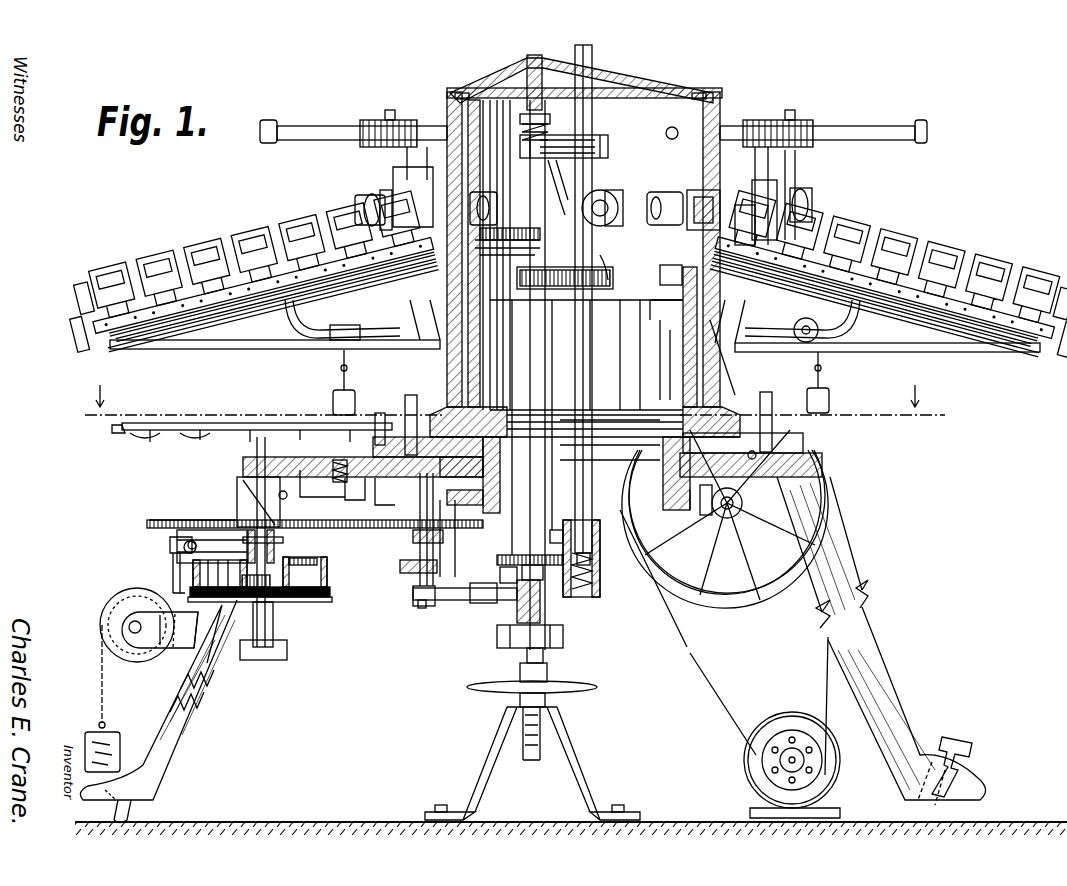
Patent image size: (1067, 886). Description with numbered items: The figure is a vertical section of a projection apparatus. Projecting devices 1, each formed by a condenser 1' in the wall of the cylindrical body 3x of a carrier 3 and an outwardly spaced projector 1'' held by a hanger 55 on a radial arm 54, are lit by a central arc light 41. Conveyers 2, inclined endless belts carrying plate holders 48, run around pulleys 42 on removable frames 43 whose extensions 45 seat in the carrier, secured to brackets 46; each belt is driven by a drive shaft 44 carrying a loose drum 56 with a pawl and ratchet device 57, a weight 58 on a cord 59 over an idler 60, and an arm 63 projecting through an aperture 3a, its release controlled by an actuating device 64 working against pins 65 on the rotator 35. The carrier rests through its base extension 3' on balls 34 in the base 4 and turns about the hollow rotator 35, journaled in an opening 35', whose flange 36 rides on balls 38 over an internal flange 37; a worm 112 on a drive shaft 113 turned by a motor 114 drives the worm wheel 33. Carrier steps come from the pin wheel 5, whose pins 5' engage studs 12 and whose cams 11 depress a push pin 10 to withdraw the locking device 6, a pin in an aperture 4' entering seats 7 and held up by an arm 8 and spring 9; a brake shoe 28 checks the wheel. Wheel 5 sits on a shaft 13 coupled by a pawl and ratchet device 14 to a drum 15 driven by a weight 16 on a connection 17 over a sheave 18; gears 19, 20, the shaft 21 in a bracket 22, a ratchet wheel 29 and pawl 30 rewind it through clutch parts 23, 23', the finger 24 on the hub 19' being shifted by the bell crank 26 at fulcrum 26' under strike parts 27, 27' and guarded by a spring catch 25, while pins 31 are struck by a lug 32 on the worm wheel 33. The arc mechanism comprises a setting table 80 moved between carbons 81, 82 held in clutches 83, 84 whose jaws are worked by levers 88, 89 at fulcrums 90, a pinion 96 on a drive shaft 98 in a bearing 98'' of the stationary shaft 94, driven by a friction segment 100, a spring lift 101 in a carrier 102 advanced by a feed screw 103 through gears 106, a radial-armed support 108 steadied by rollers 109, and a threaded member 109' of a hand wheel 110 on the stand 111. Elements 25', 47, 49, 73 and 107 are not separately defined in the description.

The projecting devices 1 is at (500, 203).
The condensers 1' is at (703, 189).
The projectors 1'' is at (574, 197).
The conveyers 2 is at (92, 335).
The carrier 3 is at (508, 374).
The annular base extension 3' is at (775, 450).
The aperture of carrier body 3a is at (672, 265).
The cylindrical body 3x is at (712, 120).
The frame or base 4 is at (559, 466).
The aperture of base 4' is at (346, 497).
The pin wheel 5 is at (170, 451).
The pins 5' is at (114, 443).
The locking device 6 is at (375, 498).
The seats 7 is at (679, 612).
The arm 8 is at (275, 500).
The spring 9 is at (320, 494).
The push pin 10 is at (285, 423).
The cams 11 is at (333, 470).
The studs 12 is at (379, 413).
The vertical shaft 13 is at (287, 650).
The pawl and ratchet device 14 is at (235, 602).
The operating drum 15 is at (275, 605).
The weight 16 is at (120, 745).
The flexible connection 17 is at (105, 690).
The guide sheave 18 is at (102, 608).
The spur gear 19 is at (286, 517).
The depending hub part 19' is at (193, 504).
The spur gear 20 is at (418, 540).
The driven shaft 21 is at (420, 608).
The depending bracket 22 is at (413, 592).
The clutch part 23 is at (280, 546).
The clutch part 23' is at (274, 563).
The finger 24 is at (242, 582).
The spring catch 25 is at (178, 519).
The cup 25' is at (320, 556).
The shifter 26 is at (157, 545).
The fulcrum 26' is at (147, 573).
The strike part 27 is at (126, 630).
The strike part 27' is at (181, 662).
The brake shoe 28 is at (240, 478).
The ratchet wheel 29 is at (461, 467).
The pawl 30 is at (465, 494).
The pins 31 is at (433, 551).
The strike lug 32 is at (458, 538).
The worm wheel 33 is at (673, 509).
The balls 34 is at (745, 500).
The rotator 35 is at (655, 473).
The opening of base 35' is at (644, 500).
The external annular flange 36 is at (610, 445).
The internal flange 37 is at (610, 425).
The balls 38 is at (610, 464).
The electric arc light 41 is at (607, 203).
The pulleys 42 is at (215, 343).
The frames 43 is at (240, 352).
The drive shaft 44 is at (597, 419).
The spaced extensions 45 is at (655, 222).
The brackets 46 is at (315, 348).
The end clip 47 is at (105, 280).
The plate holders 48 is at (185, 268).
The strap 49 is at (772, 209).
The radial arms 54 is at (300, 128).
The hangers 55 is at (405, 150).
The loose drum 56 is at (430, 349).
The pawl and ratchet device 57 is at (665, 365).
The weight 58 is at (333, 400).
The flexible connection 59 is at (341, 367).
The idler 60 is at (360, 348).
The arm 63 is at (646, 360).
The actuating device 64 is at (666, 309).
The pins 65 is at (645, 318).
The magazine plate 73 is at (140, 349).
The setting table 80 is at (483, 195).
The carbon 81 is at (590, 331).
The carbon 82 is at (560, 165).
The clutch 83 is at (627, 261).
The clutch 84 is at (606, 140).
The shifter lever 88 is at (603, 196).
The shifter lever 89 is at (570, 265).
The fulcrum 90 is at (505, 605).
The stationary shaft 94 is at (470, 92).
The pinion 96 is at (507, 244).
The drive shaft 98 is at (514, 557).
The bearing 98'' is at (515, 648).
The friction segment 100 is at (470, 603).
The spring lift 101 is at (598, 595).
The carrier 102 is at (600, 570).
The feed screw 103 is at (575, 386).
The train of gears 106 is at (548, 600).
The collar 107 is at (516, 126).
The radial-armed support 108 is at (575, 60).
The rollers 109 is at (555, 82).
The internally threaded member 109' is at (580, 665).
The hand wheel 110 is at (597, 688).
The stand 111 is at (585, 760).
The worm 112 is at (712, 548).
The drive shaft 113 is at (750, 540).
The motor 114 is at (787, 715).